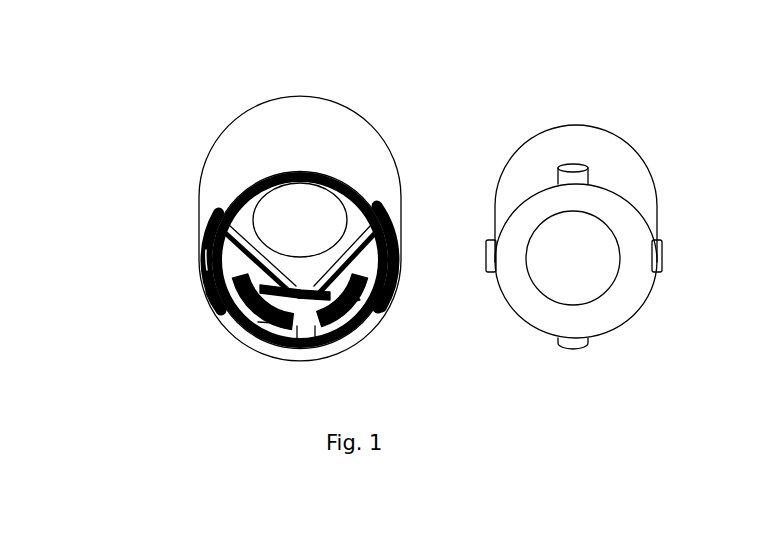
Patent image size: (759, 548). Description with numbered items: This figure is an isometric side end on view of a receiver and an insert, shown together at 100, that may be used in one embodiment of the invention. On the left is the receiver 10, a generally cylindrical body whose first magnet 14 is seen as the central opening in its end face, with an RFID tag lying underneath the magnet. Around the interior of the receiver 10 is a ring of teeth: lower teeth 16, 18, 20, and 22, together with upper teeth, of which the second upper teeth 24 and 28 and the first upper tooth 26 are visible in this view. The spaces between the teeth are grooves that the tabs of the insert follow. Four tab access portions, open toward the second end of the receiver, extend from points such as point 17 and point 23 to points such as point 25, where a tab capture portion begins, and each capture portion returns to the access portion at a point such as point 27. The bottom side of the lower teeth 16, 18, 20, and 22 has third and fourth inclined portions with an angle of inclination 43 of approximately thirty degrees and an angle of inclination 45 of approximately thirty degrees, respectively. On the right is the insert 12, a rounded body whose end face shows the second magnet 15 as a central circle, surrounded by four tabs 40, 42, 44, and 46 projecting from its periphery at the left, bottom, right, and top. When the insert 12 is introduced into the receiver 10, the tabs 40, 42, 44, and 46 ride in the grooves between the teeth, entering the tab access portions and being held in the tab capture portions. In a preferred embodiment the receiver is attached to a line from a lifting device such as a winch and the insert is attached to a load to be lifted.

The receiver and insert view 100 is at (150, 113).
The receiver 10 is at (230, 140).
The insert 12 is at (510, 178).
The first magnet 14 is at (300, 188).
The second magnet 15 is at (608, 238).
The lower tooth 16 is at (270, 326).
The point 17 is at (304, 336).
The lower tooth 18 is at (372, 314).
The lower tooth 20 is at (349, 183).
The lower tooth 22 is at (212, 222).
The point 23 is at (206, 264).
The second upper tooth 24 is at (258, 276).
The point 25 is at (272, 300).
The first upper tooth 26 is at (318, 292).
The point 27 is at (346, 292).
The second upper tooth 28 is at (358, 270).
The tab 40 is at (486, 256).
The tab 42 is at (214, 305).
The angle of inclination 43 is at (286, 342).
The tab 44 is at (384, 300).
The angle of inclination 45 is at (326, 336).
The tab 46 is at (560, 168).